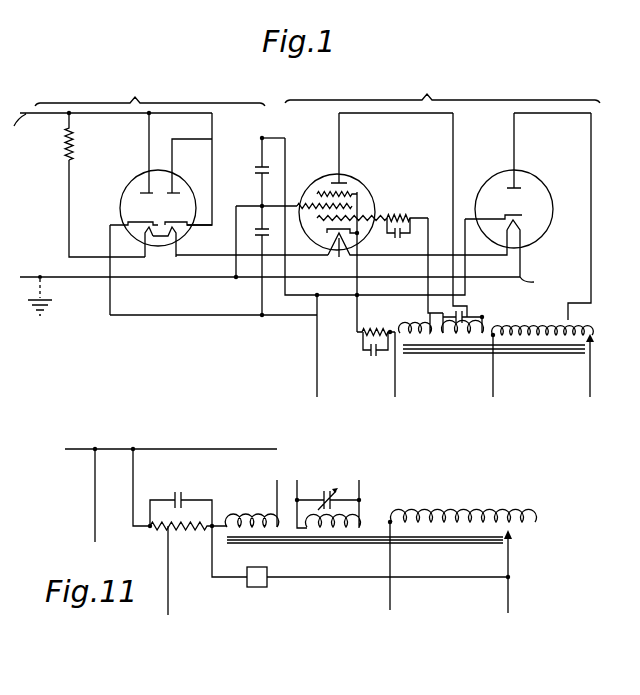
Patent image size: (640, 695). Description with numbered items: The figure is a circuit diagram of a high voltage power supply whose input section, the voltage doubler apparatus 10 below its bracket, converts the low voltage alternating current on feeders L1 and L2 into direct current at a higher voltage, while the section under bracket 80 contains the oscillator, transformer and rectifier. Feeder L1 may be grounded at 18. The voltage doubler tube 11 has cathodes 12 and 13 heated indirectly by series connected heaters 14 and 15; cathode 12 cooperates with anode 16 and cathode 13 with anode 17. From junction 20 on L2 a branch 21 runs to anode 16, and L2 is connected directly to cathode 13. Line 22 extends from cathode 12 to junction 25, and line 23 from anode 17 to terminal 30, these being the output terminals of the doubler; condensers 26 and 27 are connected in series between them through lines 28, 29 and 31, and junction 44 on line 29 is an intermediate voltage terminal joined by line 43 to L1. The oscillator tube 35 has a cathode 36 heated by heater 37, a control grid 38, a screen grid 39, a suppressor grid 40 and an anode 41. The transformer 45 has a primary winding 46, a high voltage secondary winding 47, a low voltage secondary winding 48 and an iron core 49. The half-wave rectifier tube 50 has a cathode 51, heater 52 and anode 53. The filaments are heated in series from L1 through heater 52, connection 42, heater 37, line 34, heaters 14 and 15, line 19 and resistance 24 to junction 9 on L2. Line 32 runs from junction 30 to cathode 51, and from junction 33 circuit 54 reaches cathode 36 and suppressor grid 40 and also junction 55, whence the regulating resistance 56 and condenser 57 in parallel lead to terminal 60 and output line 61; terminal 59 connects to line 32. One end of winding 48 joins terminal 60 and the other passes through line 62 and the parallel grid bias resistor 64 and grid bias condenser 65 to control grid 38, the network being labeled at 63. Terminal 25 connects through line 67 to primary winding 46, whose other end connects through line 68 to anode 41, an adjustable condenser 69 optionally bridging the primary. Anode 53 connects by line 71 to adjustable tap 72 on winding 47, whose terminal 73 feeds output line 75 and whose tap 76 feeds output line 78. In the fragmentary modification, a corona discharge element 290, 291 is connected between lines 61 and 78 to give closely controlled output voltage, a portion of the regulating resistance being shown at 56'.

In FIG. 1, the junction 9 is at (71, 115).
In FIG. 1, the voltage doubler apparatus 10 is at (150, 94).
In FIG. 1, the amplifier stage 80 is at (442, 89).
In FIG. 1, the voltage doubler tube 11 is at (130, 180).
In FIG. 1, the cathode 12 is at (128, 222).
In FIG. 1, the cathode 13 is at (176, 222).
In FIG. 1, the heater 14 is at (144, 251).
In FIG. 1, the heater 15 is at (167, 251).
In FIG. 1, the anode 16 is at (139, 193).
In FIG. 1, the anode 17 is at (181, 192).
In FIG. 1, the ground 18 is at (46, 302).
In FIG. 1, the line 19 is at (68, 210).
In FIG. 1, the junction 20 is at (147, 115).
In FIG. 1, the branch 21 is at (151, 130).
In FIG. 1, the line 22 is at (112, 298).
In FIG. 1, the line 23 is at (177, 154).
In FIG. 1, the resistance 24 is at (73, 158).
In FIG. 1, the junction 25 is at (262, 316).
In FIG. 1, the condenser 26 is at (250, 175).
In FIG. 1, the condenser 27 is at (253, 260).
In FIG. 1, the line 28 is at (260, 294).
In FIG. 1, the line 29 is at (260, 190).
In FIG. 1, the terminal 30 is at (262, 140).
In FIG. 1, the line 31 is at (259, 152).
In FIG. 1, the line 32 is at (287, 153).
In FIG. 11, the line 32 is at (254, 448).
In FIG. 1, the junction 33 is at (356, 294).
In FIG. 11, the junction 33 is at (135, 447).
In FIG. 1, the line 34 is at (203, 254).
In FIG. 1, the oscillator tube 35 is at (356, 180).
In FIG. 1, the cathode 36 is at (326, 233).
In FIG. 1, the heater 37 is at (417, 252).
In FIG. 1, the control grid 38 is at (348, 218).
In FIG. 11, the control grid 38 is at (166, 595).
In FIG. 1, the screen grid 39 is at (352, 205).
In FIG. 1, the suppressor grid 40 is at (354, 192).
In FIG. 1, the anode 41 is at (341, 180).
In FIG. 1, the connection 42 is at (417, 254).
In FIG. 1, the line 43 is at (236, 228).
In FIG. 1, the junction 44 is at (263, 204).
In FIG. 1, the transformer 45 is at (596, 335).
In FIG. 11, the transformer 45 is at (527, 514).
In FIG. 1, the primary winding 46 is at (474, 331).
In FIG. 11, the primary winding 46 is at (352, 521).
In FIG. 1, the high voltage secondary winding 47 is at (534, 328).
In FIG. 11, the high voltage secondary winding 47 is at (433, 514).
In FIG. 1, the low voltage secondary winding 48 is at (398, 345).
In FIG. 11, the low voltage secondary winding 48 is at (246, 520).
In FIG. 1, the iron core 49 is at (554, 352).
In FIG. 11, the iron core 49 is at (424, 546).
In FIG. 1, the half-wave rectifier tube 50 is at (518, 176).
In FIG. 1, the cathode 51 is at (523, 214).
In FIG. 1, the heater 52 is at (524, 228).
In FIG. 1, the anode 53 is at (522, 188).
In FIG. 1, the circuit 54 is at (355, 322).
In FIG. 11, the circuit 54 is at (131, 490).
In FIG. 1, the junction 55 is at (360, 334).
In FIG. 11, the junction 55 is at (148, 529).
In FIG. 1, the regulating resistance 56 is at (376, 323).
In FIG. 11, the regulating resistance 56 is at (188, 541).
In FIG. 11, the resistor portion 56' is at (156, 547).
In FIG. 1, the condenser 57 is at (368, 352).
In FIG. 11, the condenser 57 is at (170, 496).
In FIG. 1, the terminal 59 is at (319, 385).
In FIG. 11, the terminal 59 is at (93, 512).
In FIG. 1, the terminal 60 is at (398, 332).
In FIG. 11, the terminal 60 is at (211, 524).
In FIG. 1, the output line 61 is at (393, 385).
In FIG. 11, the output line 61 is at (214, 562).
In FIG. 1, the line 62 is at (431, 223).
In FIG. 11, the line 62 is at (278, 481).
In FIG. 1, the conductor 63 is at (413, 216).
In FIG. 1, the grid bias resistor 64 is at (404, 214).
In FIG. 1, the grid bias condenser 65 is at (391, 234).
In FIG. 1, the line 67 is at (301, 318).
In FIG. 11, the line 67 is at (298, 486).
In FIG. 1, the line 68 is at (455, 148).
In FIG. 1, the adjustable condenser 69 is at (461, 310).
In FIG. 11, the adjustable condenser 69 is at (330, 494).
In FIG. 1, the line 71 is at (592, 148).
In FIG. 11, the line 71 is at (479, 513).
In FIG. 1, the tap 72 is at (570, 321).
In FIG. 11, the tap 72 is at (477, 513).
In FIG. 1, the terminal 73 is at (494, 334).
In FIG. 11, the terminal 73 is at (390, 520).
In FIG. 1, the output line 75 is at (491, 385).
In FIG. 11, the output line 75 is at (392, 596).
In FIG. 1, the tap 76 is at (602, 339).
In FIG. 11, the tap 76 is at (514, 533).
In FIG. 1, the output line 78 is at (603, 376).
In FIG. 11, the output line 78 is at (511, 563).
In FIG. 11, the corona discharge element 290 is at (253, 584).
In FIG. 11, the corona discharge element 291 is at (268, 597).
In FIG. 1, the feeder L1 is at (288, 269).
In FIG. 1, the feeder L2 is at (221, 145).